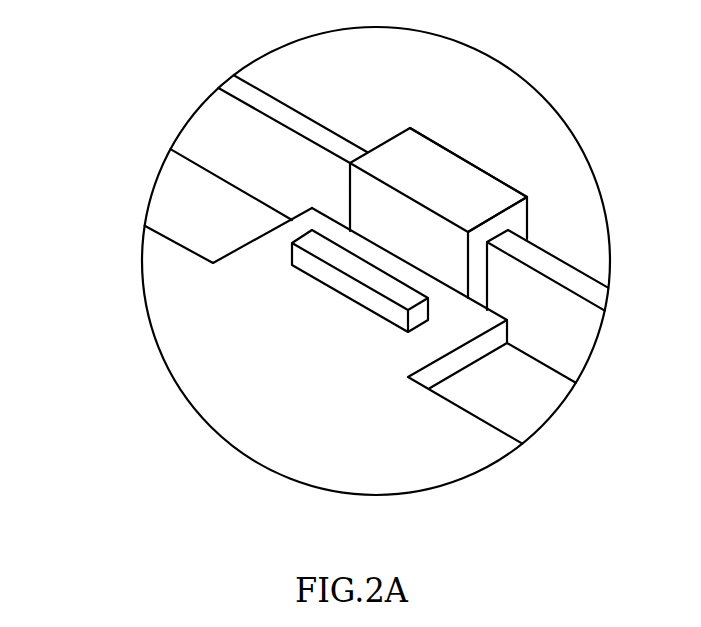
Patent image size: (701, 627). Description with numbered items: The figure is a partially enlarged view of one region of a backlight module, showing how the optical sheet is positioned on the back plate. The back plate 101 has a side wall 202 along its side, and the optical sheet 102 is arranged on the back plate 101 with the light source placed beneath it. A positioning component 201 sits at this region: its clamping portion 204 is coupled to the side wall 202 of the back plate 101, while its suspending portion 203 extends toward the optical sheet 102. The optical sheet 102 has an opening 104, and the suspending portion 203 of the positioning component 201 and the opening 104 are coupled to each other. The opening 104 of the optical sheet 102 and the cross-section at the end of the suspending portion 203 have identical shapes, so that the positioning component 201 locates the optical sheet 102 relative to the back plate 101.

The back plate 101 is at (180, 208).
The optical sheet 102 is at (212, 343).
The opening 104 is at (425, 325).
The positioning component 201 is at (435, 177).
The side wall 202 is at (283, 113).
The suspending portion 203 is at (358, 288).
The clamping portion 204 is at (488, 185).